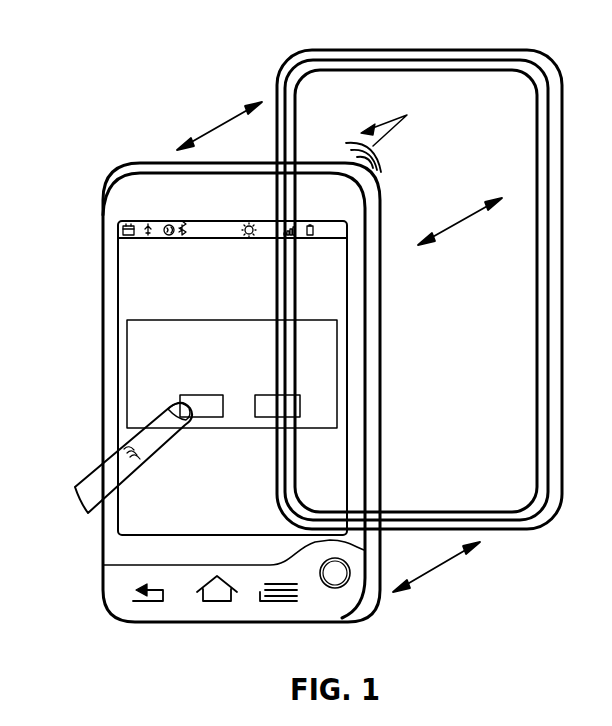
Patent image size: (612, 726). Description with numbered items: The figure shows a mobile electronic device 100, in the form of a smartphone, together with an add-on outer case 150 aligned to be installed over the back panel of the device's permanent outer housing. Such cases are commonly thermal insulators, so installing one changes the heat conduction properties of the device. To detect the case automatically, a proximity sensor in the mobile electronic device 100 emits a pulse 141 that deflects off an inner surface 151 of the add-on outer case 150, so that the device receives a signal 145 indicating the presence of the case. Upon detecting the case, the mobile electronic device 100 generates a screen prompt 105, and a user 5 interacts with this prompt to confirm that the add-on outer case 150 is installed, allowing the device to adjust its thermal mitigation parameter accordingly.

The mobile electronic device 100 is at (102, 277).
The screen prompt 105 is at (140, 387).
The user 5 is at (107, 477).
The add-on outer case 150 is at (290, 56).
The inner surface 151 is at (484, 113).
The signal 145 is at (407, 115).
The pulse 141 is at (383, 163).